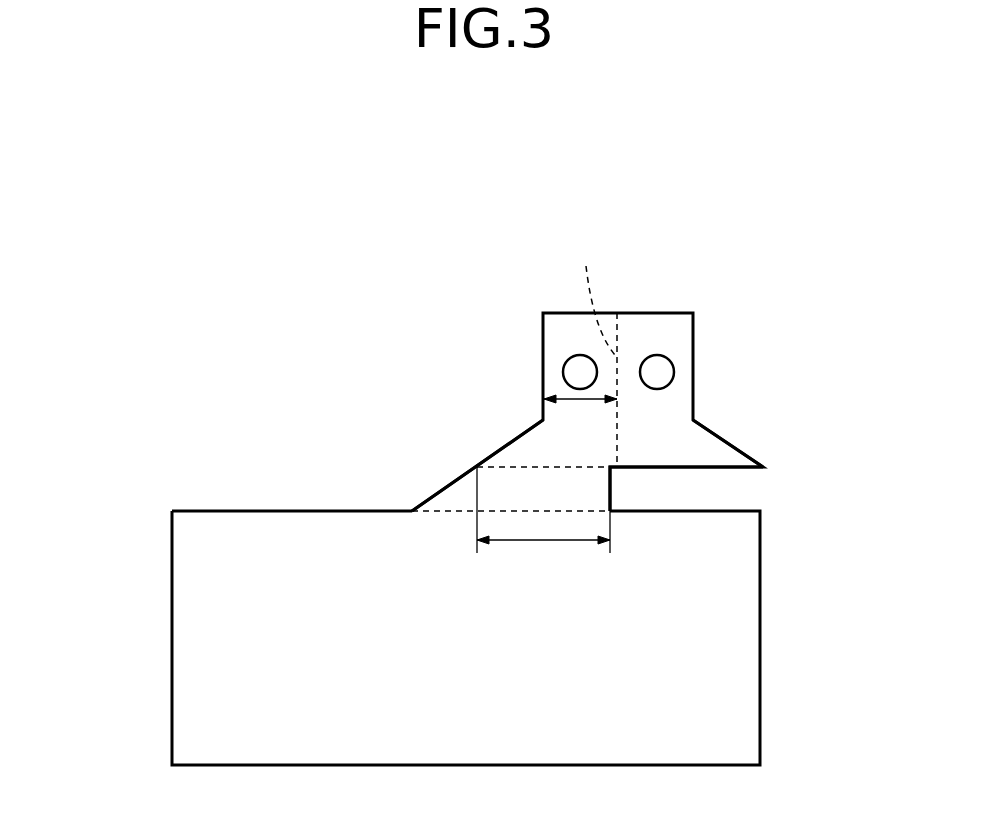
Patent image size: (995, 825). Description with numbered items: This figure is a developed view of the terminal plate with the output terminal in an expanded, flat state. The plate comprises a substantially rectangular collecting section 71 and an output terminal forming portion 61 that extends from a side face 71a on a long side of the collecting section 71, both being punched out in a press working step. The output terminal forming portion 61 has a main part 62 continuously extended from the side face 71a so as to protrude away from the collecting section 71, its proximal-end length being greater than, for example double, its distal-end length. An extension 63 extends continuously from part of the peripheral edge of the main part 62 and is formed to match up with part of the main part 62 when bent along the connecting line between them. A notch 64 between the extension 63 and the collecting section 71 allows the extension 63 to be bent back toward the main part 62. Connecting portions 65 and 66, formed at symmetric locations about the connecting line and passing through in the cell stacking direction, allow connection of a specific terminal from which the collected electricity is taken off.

The output terminal forming portion 61 is at (617, 297).
The main part 62 is at (513, 437).
The extension 63 is at (713, 432).
The notch 64 is at (675, 487).
The connecting portion 65 is at (570, 355).
The connecting portion 66 is at (658, 355).
The collecting section 71 is at (172, 718).
The side face 71a is at (272, 511).